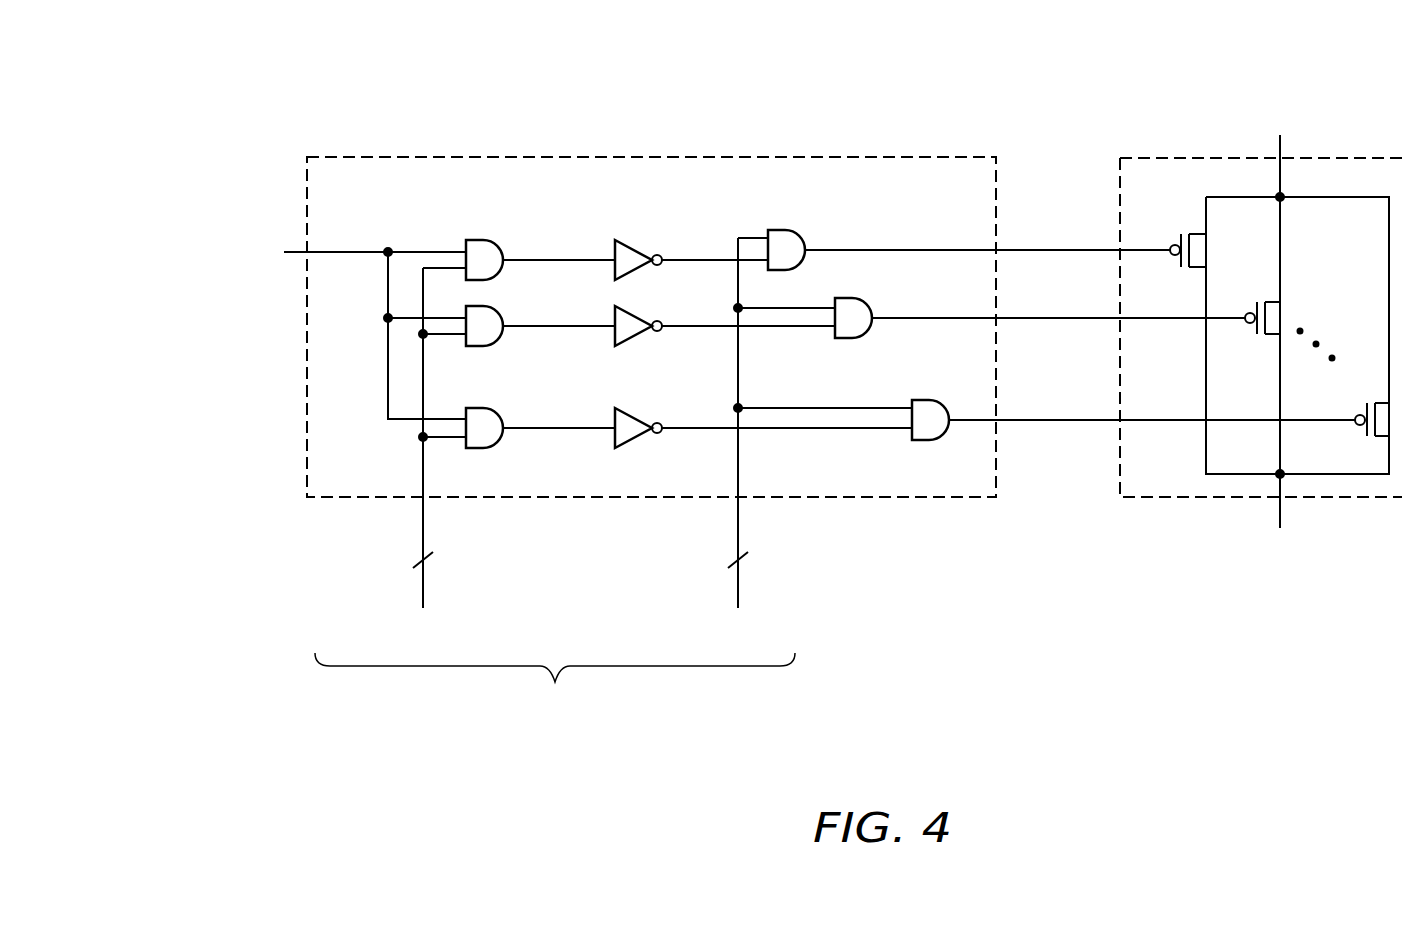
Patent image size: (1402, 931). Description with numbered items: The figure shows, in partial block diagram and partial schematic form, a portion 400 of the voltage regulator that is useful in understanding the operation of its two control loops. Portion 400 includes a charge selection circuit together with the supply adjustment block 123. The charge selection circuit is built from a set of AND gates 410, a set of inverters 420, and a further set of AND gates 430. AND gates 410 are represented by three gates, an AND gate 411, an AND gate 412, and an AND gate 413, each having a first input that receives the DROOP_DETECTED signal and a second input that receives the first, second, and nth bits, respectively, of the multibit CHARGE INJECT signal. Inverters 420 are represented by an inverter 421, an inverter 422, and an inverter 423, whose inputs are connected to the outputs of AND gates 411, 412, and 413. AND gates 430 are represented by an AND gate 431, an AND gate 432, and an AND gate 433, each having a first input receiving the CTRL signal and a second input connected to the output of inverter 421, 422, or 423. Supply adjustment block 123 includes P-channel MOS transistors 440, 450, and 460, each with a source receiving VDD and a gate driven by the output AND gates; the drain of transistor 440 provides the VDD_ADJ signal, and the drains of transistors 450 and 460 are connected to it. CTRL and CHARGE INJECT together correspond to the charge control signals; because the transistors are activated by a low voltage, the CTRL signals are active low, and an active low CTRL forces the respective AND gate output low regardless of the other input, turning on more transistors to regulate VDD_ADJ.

The portion of the voltage regulator 400 is at (254, 68).
The set of AND gates 410 is at (446, 214).
The AND gate 411 is at (497, 240).
The AND gate 412 is at (490, 306).
The AND gate 413 is at (497, 408).
The set of inverters 420 is at (627, 214).
The inverter 421 is at (615, 278).
The inverter 422 is at (615, 344).
The inverter 423 is at (615, 444).
The set of AND gates 430 is at (758, 214).
The AND gate 431 is at (802, 238).
The AND gate 432 is at (870, 312).
The AND gate 433 is at (925, 400).
The supply adjustment block 123 is at (1162, 158).
The transistor 440 is at (1197, 236).
The transistor 450 is at (1272, 300).
The transistor 460 is at (1382, 400).